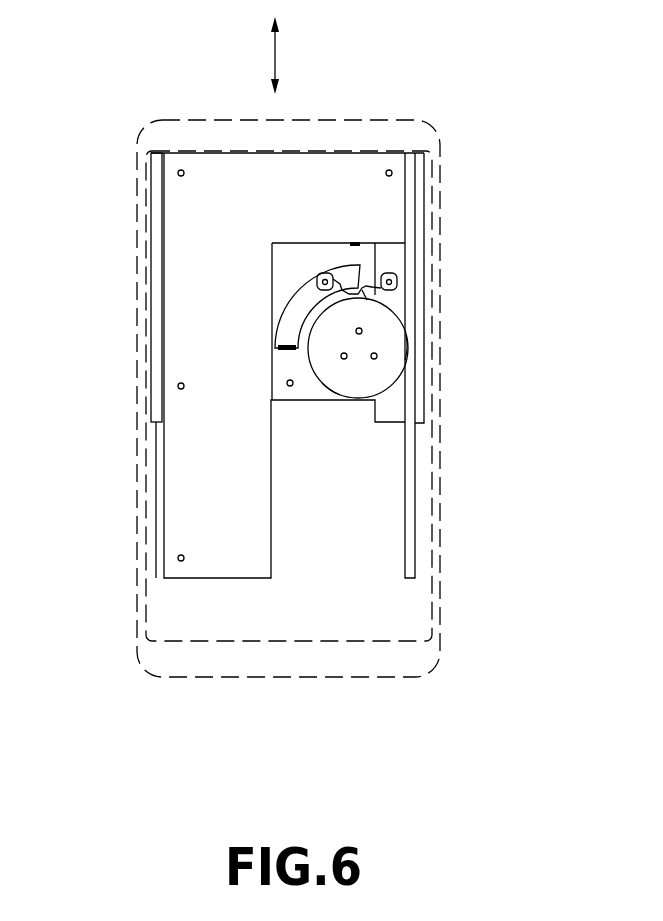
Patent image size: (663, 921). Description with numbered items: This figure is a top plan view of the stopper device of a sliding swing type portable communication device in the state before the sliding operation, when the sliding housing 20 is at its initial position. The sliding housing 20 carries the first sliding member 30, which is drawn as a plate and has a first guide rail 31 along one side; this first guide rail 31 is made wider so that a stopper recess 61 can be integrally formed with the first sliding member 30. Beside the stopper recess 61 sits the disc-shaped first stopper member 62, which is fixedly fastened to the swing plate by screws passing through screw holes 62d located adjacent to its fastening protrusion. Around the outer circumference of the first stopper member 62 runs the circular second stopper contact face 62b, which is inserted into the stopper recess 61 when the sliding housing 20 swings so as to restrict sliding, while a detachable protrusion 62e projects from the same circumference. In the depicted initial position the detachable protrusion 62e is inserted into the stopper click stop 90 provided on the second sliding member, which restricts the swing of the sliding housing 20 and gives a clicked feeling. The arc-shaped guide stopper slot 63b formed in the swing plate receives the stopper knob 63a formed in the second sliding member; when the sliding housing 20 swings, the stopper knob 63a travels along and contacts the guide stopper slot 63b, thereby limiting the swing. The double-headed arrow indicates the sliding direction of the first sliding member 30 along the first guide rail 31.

The sliding housing 20 is at (307, 662).
The first sliding member 30 is at (365, 173).
The first guide rail 31 is at (421, 541).
The stopper recess 61 is at (403, 377).
The first stopper member 62 is at (385, 382).
The second stopper contact face 62b is at (328, 392).
The screw holes 62d is at (403, 345).
The detachable protrusion 62e is at (368, 300).
The stopper knob 63a is at (286, 345).
The guide stopper slot 63b is at (302, 302).
The stopper click stop 90 is at (378, 272).